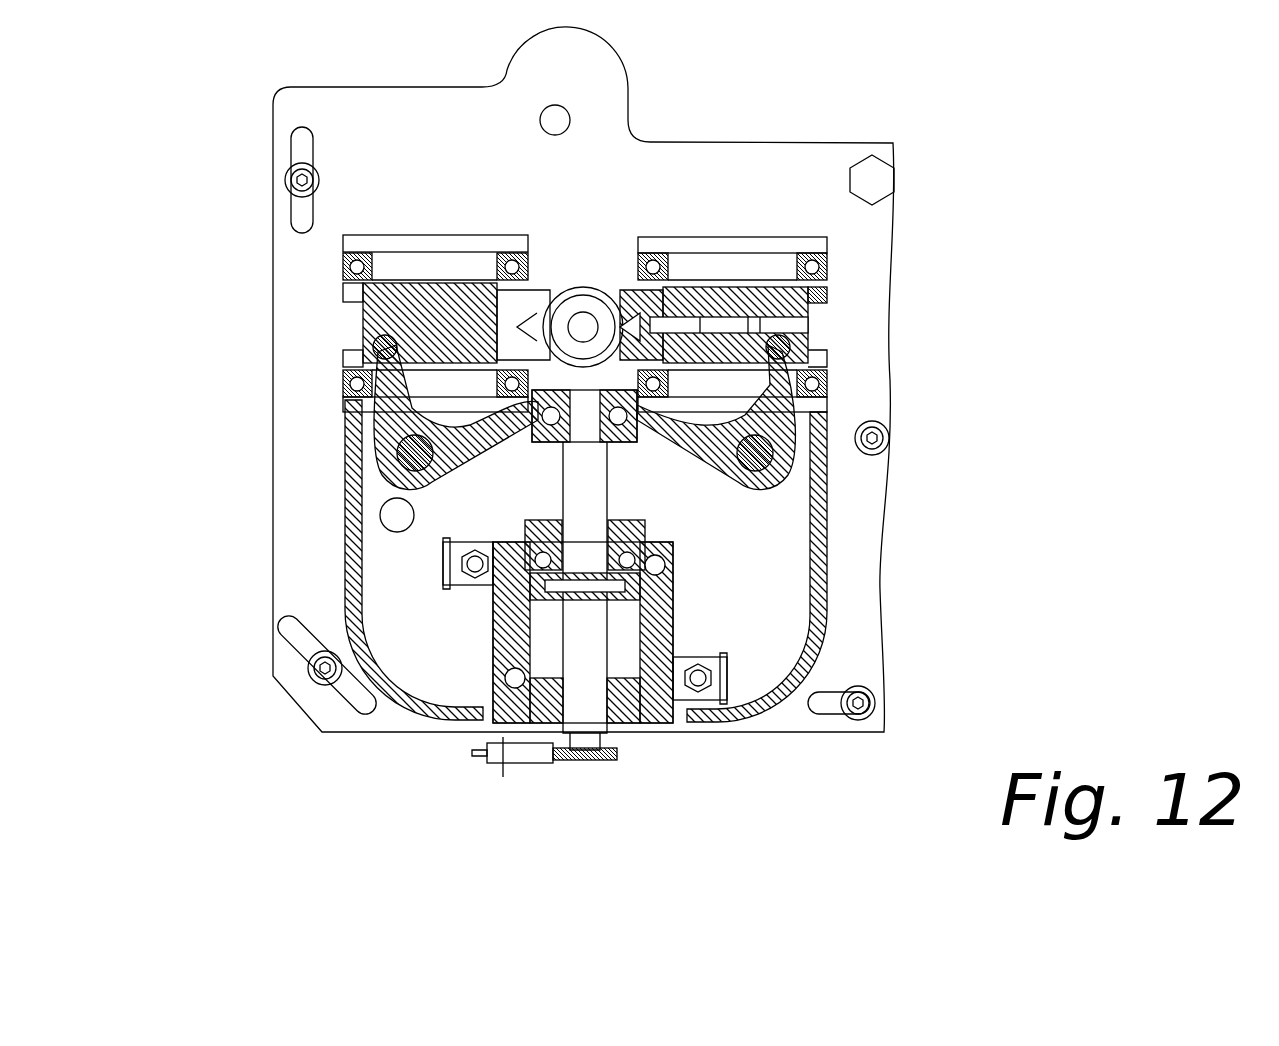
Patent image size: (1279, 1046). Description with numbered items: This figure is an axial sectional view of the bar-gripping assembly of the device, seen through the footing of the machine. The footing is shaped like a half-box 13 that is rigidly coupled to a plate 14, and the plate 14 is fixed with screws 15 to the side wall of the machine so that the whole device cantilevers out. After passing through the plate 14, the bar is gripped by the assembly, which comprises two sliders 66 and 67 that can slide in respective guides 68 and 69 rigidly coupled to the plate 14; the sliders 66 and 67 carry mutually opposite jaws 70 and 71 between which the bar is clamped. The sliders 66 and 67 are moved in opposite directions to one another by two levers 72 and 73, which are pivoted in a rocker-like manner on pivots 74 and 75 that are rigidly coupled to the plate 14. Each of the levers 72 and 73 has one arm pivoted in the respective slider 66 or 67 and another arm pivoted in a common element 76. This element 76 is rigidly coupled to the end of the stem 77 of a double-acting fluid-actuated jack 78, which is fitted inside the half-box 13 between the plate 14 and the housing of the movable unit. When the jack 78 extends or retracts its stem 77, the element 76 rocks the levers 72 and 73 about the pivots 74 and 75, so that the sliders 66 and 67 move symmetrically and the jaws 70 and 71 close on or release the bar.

The half-box 13 is at (330, 585).
The plate 14 is at (292, 115).
The screws 15 is at (880, 182).
The slider 66 is at (378, 318).
The slider 67 is at (808, 300).
The guide 68 is at (440, 252).
The guide 69 is at (725, 240).
The jaw 70 is at (540, 292).
The jaw 71 is at (622, 300).
The lever 72 is at (400, 420).
The lever 73 is at (780, 420).
The pivot 74 is at (410, 462).
The pivot 75 is at (775, 468).
The element 76 is at (640, 450).
The stem 77 is at (575, 480).
The double-acting fluid-actuated jack 78 is at (683, 636).